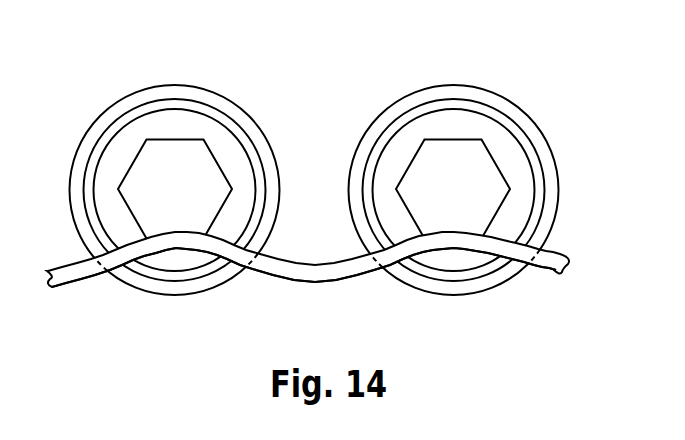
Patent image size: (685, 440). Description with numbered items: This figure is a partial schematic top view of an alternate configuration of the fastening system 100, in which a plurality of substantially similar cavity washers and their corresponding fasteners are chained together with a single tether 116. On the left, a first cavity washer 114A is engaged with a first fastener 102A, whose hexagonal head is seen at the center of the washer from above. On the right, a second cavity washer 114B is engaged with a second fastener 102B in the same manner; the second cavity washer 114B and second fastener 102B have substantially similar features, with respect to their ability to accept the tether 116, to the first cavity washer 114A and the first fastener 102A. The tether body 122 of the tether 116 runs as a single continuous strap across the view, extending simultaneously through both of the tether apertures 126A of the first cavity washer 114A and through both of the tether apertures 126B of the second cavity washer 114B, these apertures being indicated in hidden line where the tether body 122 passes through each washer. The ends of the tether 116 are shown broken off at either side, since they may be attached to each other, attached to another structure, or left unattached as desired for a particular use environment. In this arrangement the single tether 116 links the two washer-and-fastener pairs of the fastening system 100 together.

The fastening system 100 is at (593, 66).
The first fastener 102A is at (166, 94).
The second fastener 102B is at (479, 90).
The first cavity washer 114A is at (276, 116).
The second cavity washer 114B is at (577, 164).
The tether 116 is at (576, 241).
The tether body 122 is at (185, 272).
The tether apertures of the first cavity washer 126A is at (97, 272).
The tether apertures of the second cavity washer 126B is at (380, 268).